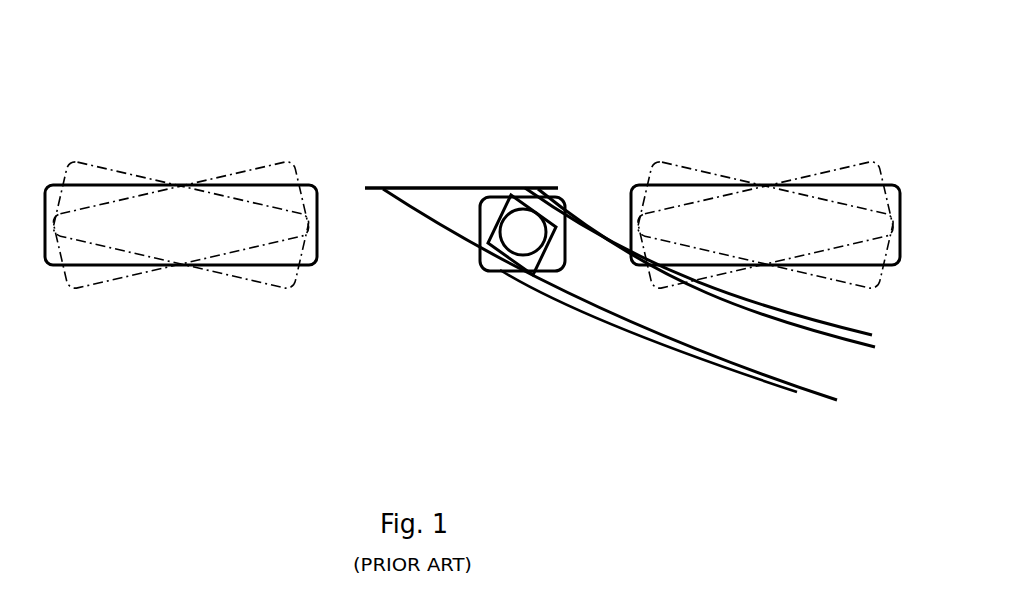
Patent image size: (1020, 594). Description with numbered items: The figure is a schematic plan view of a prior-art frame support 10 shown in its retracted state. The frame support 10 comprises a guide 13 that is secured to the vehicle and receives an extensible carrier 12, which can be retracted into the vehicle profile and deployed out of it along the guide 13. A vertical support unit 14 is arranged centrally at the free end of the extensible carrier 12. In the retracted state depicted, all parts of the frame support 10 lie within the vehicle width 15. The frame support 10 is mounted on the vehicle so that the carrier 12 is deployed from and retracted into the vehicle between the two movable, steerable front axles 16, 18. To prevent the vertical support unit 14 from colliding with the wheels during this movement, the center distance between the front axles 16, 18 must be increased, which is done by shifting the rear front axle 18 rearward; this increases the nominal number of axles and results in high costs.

The frame support 10 is at (522, 115).
The extensible carrier 12 is at (600, 287).
The guide 13 is at (442, 237).
The vertical support unit 14 is at (520, 227).
The vehicle width 15 is at (548, 173).
The front axle 16 is at (183, 185).
The rear front axle 18 is at (778, 185).